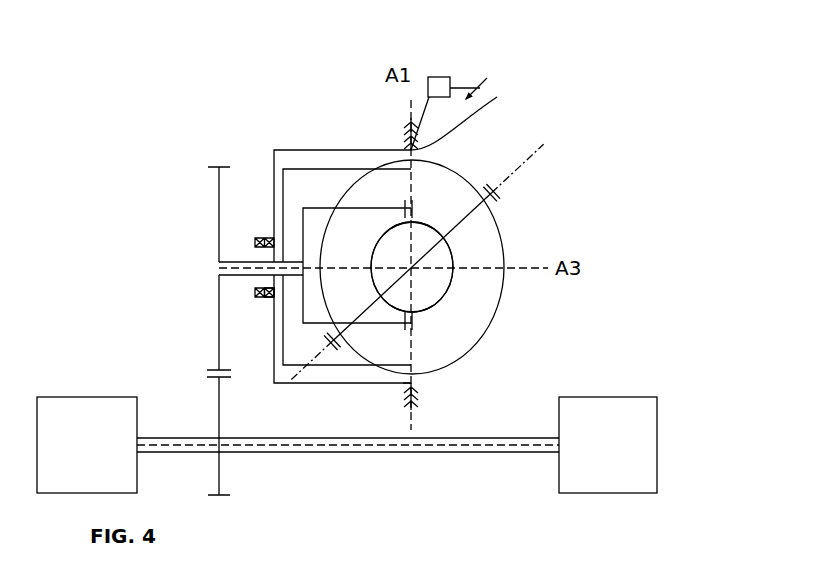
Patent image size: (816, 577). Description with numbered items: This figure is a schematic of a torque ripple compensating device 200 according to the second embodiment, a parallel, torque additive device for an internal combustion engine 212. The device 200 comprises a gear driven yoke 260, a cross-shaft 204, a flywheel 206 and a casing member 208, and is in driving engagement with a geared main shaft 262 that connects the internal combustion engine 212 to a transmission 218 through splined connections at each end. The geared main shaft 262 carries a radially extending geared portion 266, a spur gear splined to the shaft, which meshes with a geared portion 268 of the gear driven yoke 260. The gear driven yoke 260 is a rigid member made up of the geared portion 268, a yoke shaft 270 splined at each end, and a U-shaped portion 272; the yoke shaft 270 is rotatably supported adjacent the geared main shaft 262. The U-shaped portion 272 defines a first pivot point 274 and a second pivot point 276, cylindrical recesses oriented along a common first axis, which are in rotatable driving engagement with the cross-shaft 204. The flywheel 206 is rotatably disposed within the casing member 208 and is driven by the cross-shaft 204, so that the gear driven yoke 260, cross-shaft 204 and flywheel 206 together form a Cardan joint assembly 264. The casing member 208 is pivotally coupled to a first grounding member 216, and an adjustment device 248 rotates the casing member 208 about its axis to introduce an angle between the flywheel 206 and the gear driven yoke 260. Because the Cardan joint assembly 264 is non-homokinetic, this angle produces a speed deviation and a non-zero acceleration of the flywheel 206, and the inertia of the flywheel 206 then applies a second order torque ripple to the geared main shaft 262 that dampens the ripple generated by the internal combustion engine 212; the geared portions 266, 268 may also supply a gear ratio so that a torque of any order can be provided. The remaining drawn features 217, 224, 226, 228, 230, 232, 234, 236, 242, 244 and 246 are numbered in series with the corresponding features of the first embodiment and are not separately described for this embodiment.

The torque ripple compensating device 200 is at (568, 88).
The cross-shaft 204 is at (452, 293).
The flywheel 206 is at (481, 339).
The casing member 208 is at (293, 148).
The internal combustion engine 212 is at (70, 397).
The first grounding member 216 is at (406, 133).
The control signal 217 is at (482, 82).
The transmission 218 is at (598, 397).
The magnets 224 is at (405, 224).
The rotor shaft 226 is at (467, 215).
The rotor core 228 is at (453, 264).
The shaft extension 230 is at (322, 338).
The coupling 232 is at (490, 188).
The bearing 234 is at (253, 290).
The bearing 236 is at (270, 238).
The seal 242 is at (265, 298).
The support member 244 is at (471, 117).
The support member 246 is at (415, 383).
The adjustment device 248 is at (437, 77).
The gear driven yoke 260 is at (231, 258).
The geared main shaft 262 is at (342, 453).
The Cardan joint assembly 264 is at (447, 152).
The geared portion 266 is at (222, 475).
The geared portion 268 is at (218, 343).
The yoke shaft 270 is at (218, 275).
The U-shaped portion 272 is at (313, 207).
The first pivot point 274 is at (414, 210).
The second pivot point 276 is at (414, 322).